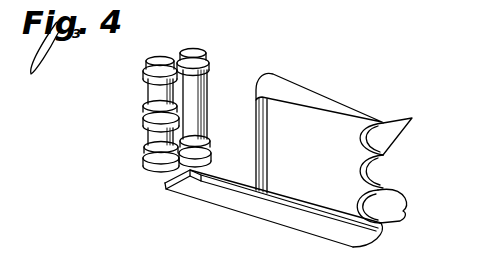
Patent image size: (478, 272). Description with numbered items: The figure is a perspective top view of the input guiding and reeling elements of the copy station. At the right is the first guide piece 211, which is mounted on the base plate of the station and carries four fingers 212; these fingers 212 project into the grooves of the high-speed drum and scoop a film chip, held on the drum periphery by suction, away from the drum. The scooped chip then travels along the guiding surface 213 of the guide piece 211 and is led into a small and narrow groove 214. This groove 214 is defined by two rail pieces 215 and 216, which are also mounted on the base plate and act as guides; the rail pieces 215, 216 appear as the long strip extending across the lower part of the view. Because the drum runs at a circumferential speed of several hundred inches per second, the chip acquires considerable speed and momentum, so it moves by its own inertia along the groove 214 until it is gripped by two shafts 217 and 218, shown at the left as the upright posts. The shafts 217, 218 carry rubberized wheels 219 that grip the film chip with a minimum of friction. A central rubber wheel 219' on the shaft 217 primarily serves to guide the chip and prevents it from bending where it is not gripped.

The first guide piece 211 is at (374, 170).
The fingers 212 is at (412, 118).
The guiding surface 213 is at (292, 120).
The groove 214 is at (176, 190).
The rail piece 215 is at (213, 200).
The rail piece 216 is at (227, 179).
The shaft 217 is at (160, 58).
The shaft 218 is at (199, 52).
The rubberized wheels 219 is at (180, 112).
The central rubber wheel 219' is at (139, 117).